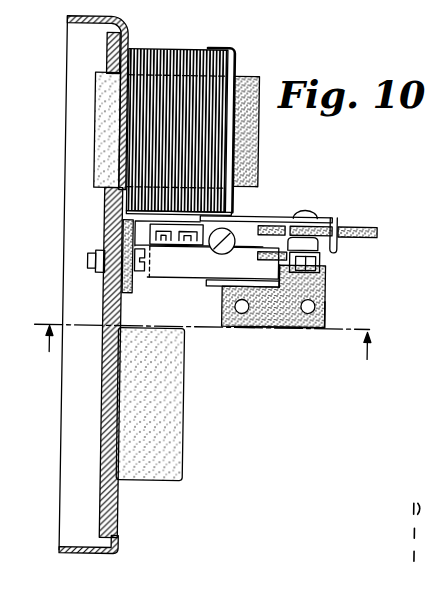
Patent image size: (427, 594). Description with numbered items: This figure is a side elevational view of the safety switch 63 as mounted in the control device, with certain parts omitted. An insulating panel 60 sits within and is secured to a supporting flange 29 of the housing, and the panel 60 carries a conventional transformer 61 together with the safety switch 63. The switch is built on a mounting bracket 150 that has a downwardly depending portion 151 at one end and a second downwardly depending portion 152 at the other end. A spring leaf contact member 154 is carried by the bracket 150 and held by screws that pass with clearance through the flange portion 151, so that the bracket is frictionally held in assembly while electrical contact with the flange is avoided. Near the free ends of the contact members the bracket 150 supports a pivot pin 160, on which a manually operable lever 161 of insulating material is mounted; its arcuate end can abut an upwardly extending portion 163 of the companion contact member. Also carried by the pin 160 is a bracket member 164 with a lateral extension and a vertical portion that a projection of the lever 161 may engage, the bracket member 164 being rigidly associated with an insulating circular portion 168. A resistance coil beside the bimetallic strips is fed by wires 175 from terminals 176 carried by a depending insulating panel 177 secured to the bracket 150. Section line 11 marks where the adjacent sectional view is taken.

The line 11— 11 is at (209, 351).
The supporting flange 29 is at (114, 549).
The insulating panel 60 is at (115, 513).
The transformer 61 is at (231, 59).
The safety switch 63 is at (314, 329).
The mounting bracket 150 is at (313, 217).
The downwardly depending portion 151 is at (122, 244).
The second downwardly depending portion 152 is at (336, 246).
The spring leaf contact member 154 is at (190, 263).
The pivot pin 160 is at (326, 284).
The manually operable lever 161 is at (372, 226).
The upwardly extending portion 163 is at (266, 229).
The bracket member 164 is at (318, 262).
The circular portion 168 is at (282, 251).
The wires 175 is at (300, 296).
The terminals 176 is at (242, 313).
The depending insulating panel 177 is at (268, 318).